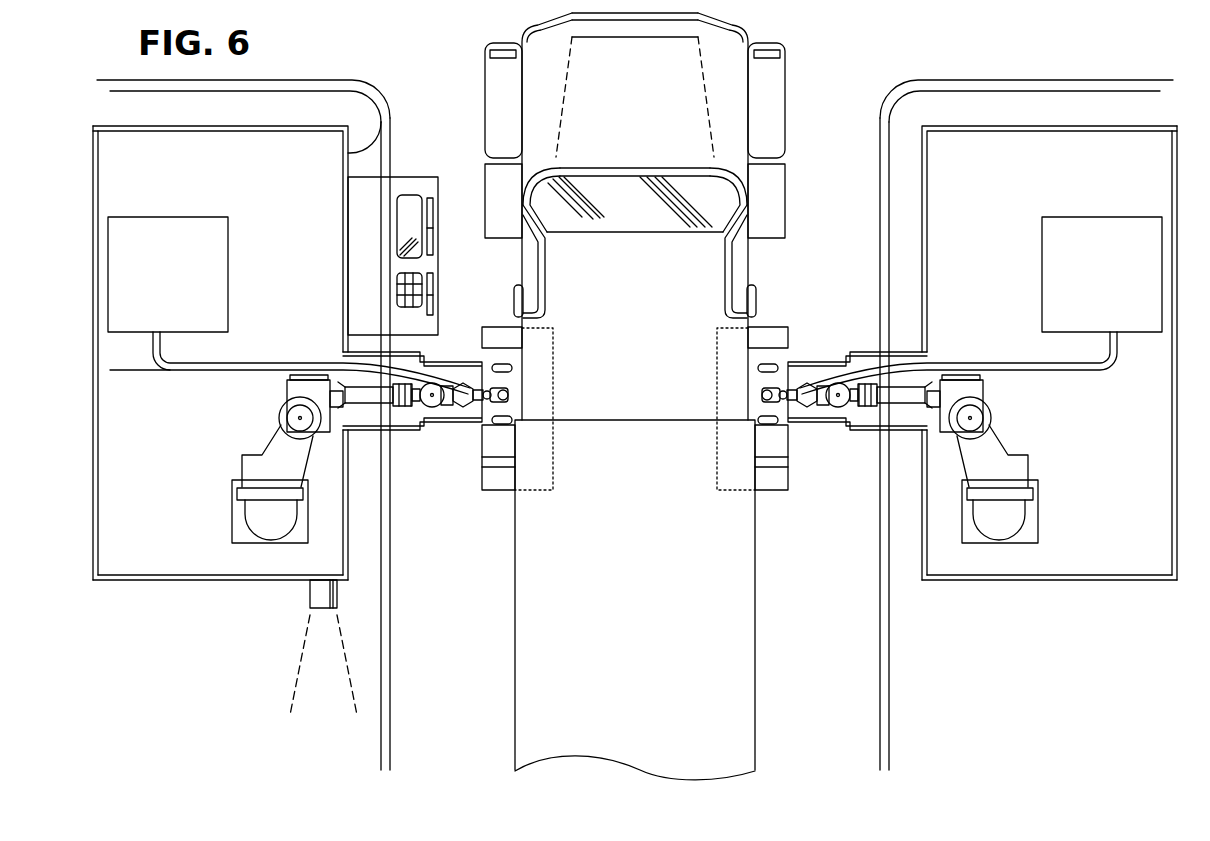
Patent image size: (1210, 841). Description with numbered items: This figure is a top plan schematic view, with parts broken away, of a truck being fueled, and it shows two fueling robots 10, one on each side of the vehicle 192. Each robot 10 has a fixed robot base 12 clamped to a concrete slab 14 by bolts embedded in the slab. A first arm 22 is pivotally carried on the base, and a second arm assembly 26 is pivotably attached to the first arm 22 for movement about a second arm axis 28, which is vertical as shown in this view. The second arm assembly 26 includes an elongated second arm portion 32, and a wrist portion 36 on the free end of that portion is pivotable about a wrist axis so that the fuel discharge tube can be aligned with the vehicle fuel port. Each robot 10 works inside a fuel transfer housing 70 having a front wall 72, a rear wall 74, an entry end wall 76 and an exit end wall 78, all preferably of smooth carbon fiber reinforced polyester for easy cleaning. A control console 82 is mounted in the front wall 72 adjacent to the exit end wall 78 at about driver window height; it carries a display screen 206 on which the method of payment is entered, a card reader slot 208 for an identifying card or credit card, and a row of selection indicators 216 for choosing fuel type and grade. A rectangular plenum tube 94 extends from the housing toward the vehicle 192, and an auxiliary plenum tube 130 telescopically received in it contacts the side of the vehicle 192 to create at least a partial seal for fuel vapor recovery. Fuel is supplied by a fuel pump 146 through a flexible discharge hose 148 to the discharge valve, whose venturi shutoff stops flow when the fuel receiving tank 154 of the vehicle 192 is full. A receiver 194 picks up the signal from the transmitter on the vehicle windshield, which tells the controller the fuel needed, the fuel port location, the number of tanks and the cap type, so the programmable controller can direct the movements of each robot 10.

The robot 10 is at (581, 507).
The fixed robot base 12 is at (243, 540).
The concrete slab 14 is at (621, 382).
The first arm 22 is at (266, 445).
The second arm assembly 26 is at (635, 437).
The second arm axis 28 is at (300, 418).
The elongated second arm portion 32 is at (866, 410).
The wrist portion 36 is at (440, 410).
The fuel transfer housing 70 is at (621, 406).
The front wall 72 is at (383, 120).
The rear wall 74 is at (92, 170).
The entry end wall 76 is at (183, 580).
The exit end wall 78 is at (112, 125).
The control console 82 is at (396, 207).
The rectangular plenum tube 94 is at (862, 352).
The auxiliary plenum tube 130 is at (820, 430).
The fuel pump 146 is at (172, 217).
The flexible discharge hose 148 is at (110, 370).
The fuel receiving tank 154 is at (500, 488).
The vehicle 192 is at (620, 415).
The receiver 194 is at (307, 597).
The display screen 206 is at (410, 195).
The card reader slot 208 is at (437, 306).
The selection indicators 216 is at (398, 297).